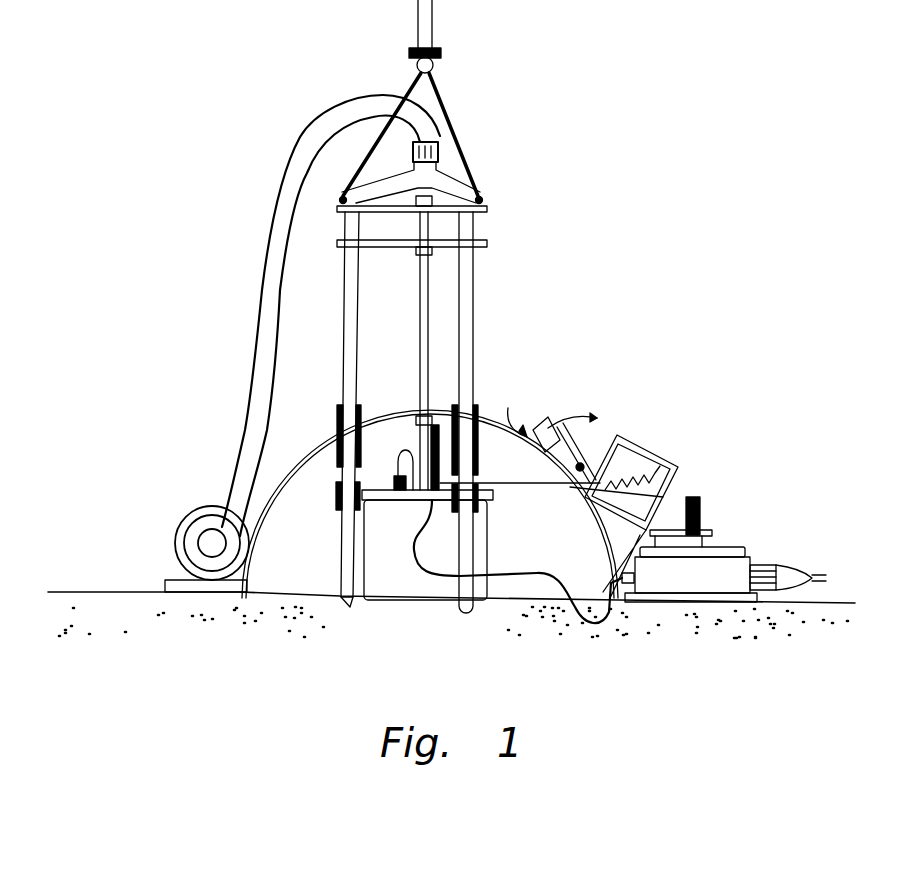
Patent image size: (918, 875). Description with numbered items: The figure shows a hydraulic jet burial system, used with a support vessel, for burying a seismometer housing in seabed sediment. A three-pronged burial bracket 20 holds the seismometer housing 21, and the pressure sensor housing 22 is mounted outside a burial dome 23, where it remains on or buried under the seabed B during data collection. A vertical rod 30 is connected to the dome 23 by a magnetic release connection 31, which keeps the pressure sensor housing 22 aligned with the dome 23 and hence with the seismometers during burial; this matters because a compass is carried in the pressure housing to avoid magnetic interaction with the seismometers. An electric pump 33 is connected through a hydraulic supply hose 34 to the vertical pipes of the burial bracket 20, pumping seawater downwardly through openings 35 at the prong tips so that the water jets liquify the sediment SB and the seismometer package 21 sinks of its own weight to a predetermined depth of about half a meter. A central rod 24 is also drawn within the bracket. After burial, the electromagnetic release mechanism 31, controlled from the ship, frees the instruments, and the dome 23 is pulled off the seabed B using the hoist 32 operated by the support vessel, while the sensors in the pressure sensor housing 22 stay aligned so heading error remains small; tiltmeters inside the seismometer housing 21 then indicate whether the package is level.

The three-pronged burial bracket 20 is at (345, 299).
The seismometer housing 21 is at (393, 585).
The pressure sensor housing 22 is at (735, 572).
The burial dome 23 is at (300, 452).
The center rod 24 is at (420, 318).
The vertical rod 30 is at (703, 518).
The magnetic release connection 31 is at (538, 355).
The hoist 32 is at (441, 100).
The electric pump 33 is at (187, 518).
The hydraulic supply hose 34 is at (260, 281).
The openings 35 is at (343, 604).
The seabed B is at (88, 590).
The sediment SB is at (129, 659).